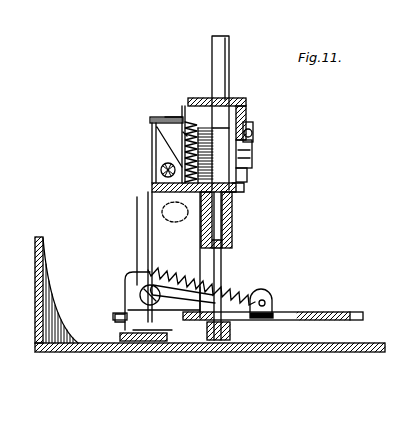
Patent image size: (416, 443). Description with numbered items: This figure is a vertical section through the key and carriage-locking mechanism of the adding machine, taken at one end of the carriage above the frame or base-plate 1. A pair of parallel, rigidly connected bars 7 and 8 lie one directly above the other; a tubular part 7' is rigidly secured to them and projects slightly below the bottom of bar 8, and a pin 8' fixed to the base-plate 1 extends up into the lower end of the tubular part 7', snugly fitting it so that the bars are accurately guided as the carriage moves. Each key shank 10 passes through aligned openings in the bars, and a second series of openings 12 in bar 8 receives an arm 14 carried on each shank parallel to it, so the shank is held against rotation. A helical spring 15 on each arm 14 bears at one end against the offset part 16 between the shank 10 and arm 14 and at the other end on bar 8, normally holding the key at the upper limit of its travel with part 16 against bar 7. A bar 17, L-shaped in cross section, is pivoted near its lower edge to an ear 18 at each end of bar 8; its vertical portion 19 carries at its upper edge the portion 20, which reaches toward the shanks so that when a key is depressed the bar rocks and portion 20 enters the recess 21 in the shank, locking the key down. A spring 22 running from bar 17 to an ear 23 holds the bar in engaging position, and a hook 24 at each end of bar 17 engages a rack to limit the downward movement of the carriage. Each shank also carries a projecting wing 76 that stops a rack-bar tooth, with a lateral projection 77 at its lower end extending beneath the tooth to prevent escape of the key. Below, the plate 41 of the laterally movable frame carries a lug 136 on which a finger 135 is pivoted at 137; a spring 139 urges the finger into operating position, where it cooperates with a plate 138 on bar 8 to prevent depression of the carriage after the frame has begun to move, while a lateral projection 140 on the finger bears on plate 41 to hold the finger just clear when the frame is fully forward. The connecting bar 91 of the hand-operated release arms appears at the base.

The base-plate 1 is at (307, 347).
The bar 7 is at (228, 122).
The tubular part 7' is at (228, 220).
The bar 8 is at (246, 197).
The pin 8' is at (230, 266).
The key shank 10 is at (230, 58).
The openings 12 is at (175, 212).
The arm 14 is at (246, 130).
The helical spring 15 is at (183, 132).
The offset portion of key shank 16 is at (236, 104).
The bar 17 is at (152, 124).
The ear 18 is at (161, 172).
The vertical portion of bar 17 19 is at (180, 147).
The portion of bar 17 20 is at (172, 119).
The recess 21 is at (187, 100).
The spring 22 is at (240, 112).
The ear 23 is at (253, 134).
The hook 24 is at (152, 128).
The plate 41 is at (320, 313).
The wing 76 is at (250, 157).
The lateral projection 77 is at (248, 173).
The bar 91 is at (133, 345).
The finger 135 is at (150, 250).
The lug 136 is at (138, 310).
The pivot 137 is at (141, 291).
The plate 138 is at (153, 190).
The spring 139 is at (251, 296).
The lateral projection 140 is at (180, 298).